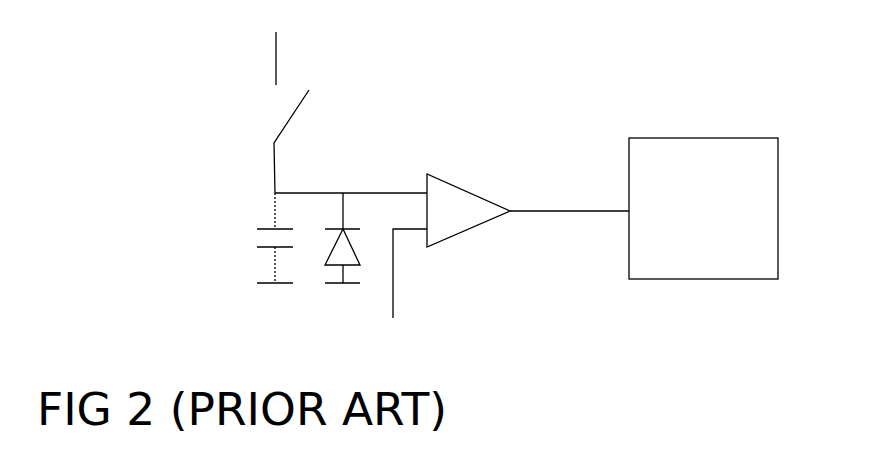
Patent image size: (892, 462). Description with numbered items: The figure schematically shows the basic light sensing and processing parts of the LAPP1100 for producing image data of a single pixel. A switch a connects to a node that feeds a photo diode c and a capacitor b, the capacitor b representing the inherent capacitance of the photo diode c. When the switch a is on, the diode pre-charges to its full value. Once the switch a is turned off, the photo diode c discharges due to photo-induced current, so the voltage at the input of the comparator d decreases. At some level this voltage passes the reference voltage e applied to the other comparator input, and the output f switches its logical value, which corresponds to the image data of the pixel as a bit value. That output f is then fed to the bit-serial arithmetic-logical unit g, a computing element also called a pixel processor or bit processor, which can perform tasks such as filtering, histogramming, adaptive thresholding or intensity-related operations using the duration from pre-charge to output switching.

The switch a is at (272, 112).
The capacitor b is at (264, 238).
The photo diode c is at (350, 238).
The comparator d is at (468, 210).
The reference voltage e is at (410, 273).
The output f is at (569, 192).
The bit-serial arithmetic-logical unit g is at (703, 208).